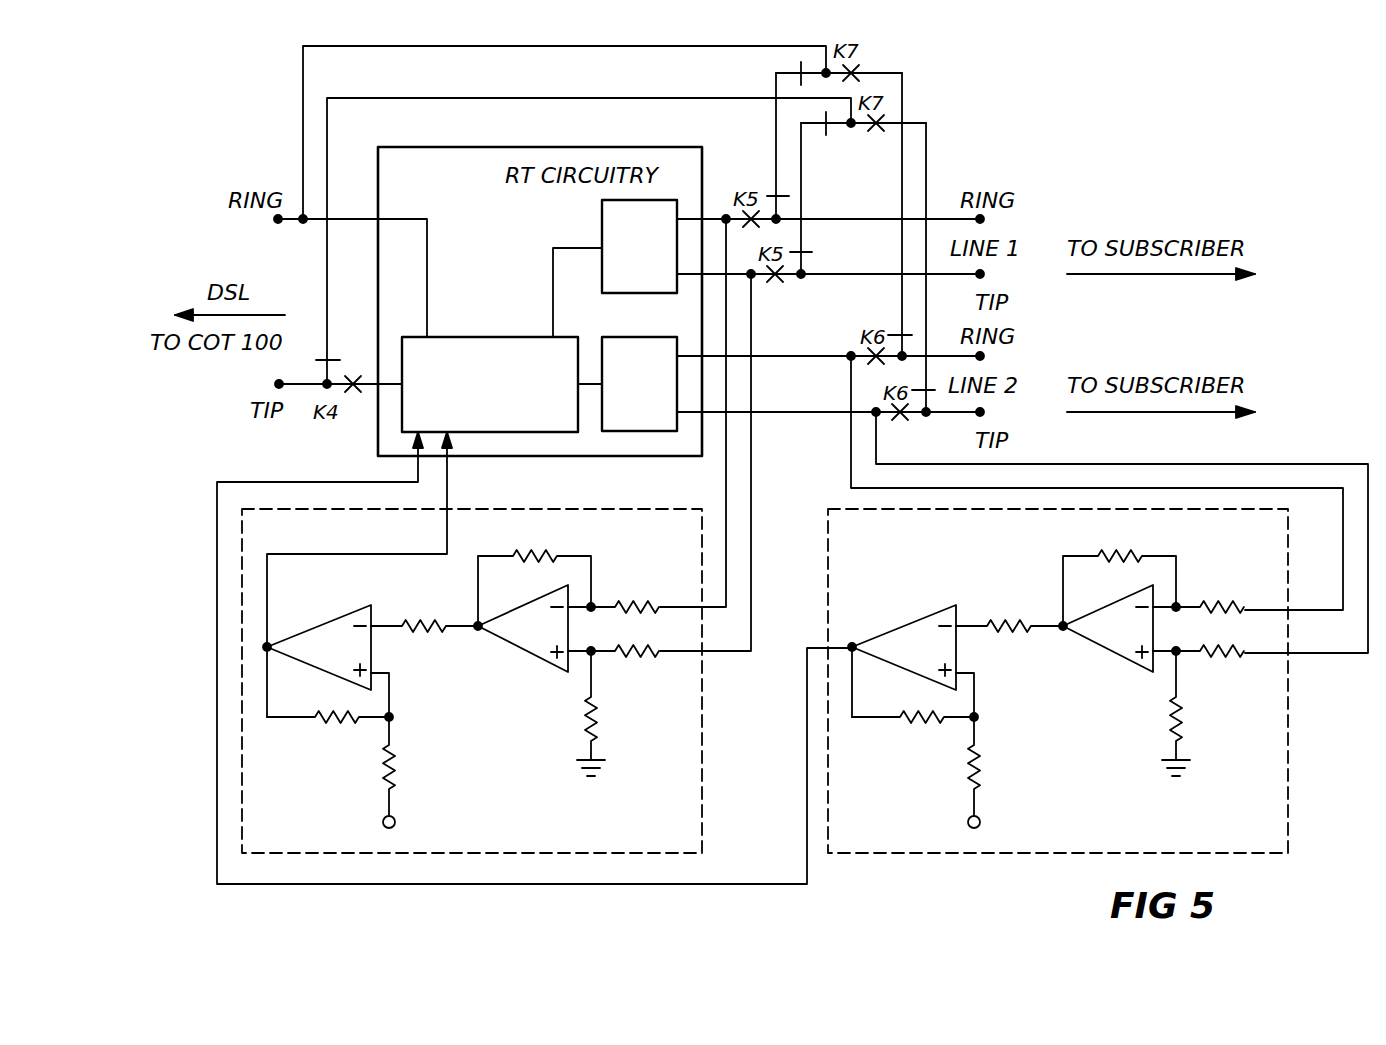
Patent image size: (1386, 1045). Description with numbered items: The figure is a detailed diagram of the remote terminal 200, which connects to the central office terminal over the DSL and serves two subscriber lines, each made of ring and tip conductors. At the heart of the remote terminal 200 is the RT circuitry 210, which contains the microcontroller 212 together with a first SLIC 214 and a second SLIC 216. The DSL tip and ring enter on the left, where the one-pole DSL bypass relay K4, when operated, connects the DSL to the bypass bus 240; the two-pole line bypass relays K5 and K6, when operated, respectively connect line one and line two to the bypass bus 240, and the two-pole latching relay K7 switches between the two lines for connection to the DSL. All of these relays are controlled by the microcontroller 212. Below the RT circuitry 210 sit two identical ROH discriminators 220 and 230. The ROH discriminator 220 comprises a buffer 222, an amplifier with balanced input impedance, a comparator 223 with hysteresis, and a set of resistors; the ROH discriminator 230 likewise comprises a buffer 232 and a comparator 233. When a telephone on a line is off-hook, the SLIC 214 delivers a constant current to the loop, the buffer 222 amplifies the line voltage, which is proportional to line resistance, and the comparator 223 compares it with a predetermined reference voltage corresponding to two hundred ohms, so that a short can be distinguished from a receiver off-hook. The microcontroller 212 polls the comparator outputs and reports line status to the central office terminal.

The remote terminal 200 is at (1085, 146).
The RT circuitry 210 is at (615, 147).
The microcontroller 212 is at (465, 337).
The SLIC 214 is at (602, 222).
The SLIC 216 is at (618, 337).
The ROH discriminator 220 is at (702, 790).
The buffer 222 is at (525, 648).
The comparator 223 is at (348, 622).
The ROH discriminator 230 is at (1288, 790).
The buffer 232 is at (1110, 648).
The comparator 233 is at (933, 622).
The bypass bus 240 is at (303, 75).
The DSL bypass relay K4 is at (338, 376).
The line bypass relay K5 is at (777, 239).
The line bypass relay K6 is at (901, 377).
The latching relay K7 is at (851, 237).